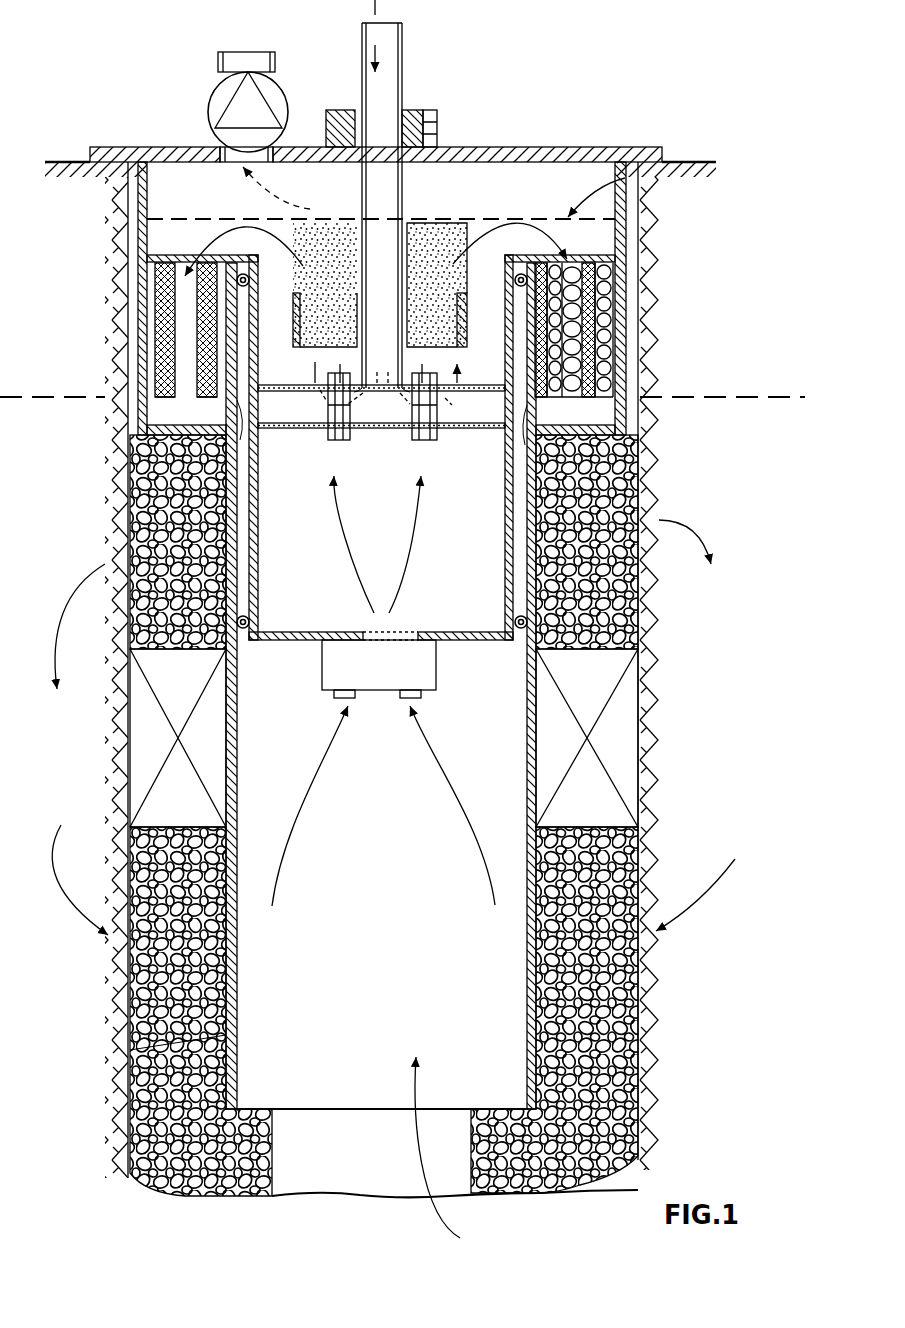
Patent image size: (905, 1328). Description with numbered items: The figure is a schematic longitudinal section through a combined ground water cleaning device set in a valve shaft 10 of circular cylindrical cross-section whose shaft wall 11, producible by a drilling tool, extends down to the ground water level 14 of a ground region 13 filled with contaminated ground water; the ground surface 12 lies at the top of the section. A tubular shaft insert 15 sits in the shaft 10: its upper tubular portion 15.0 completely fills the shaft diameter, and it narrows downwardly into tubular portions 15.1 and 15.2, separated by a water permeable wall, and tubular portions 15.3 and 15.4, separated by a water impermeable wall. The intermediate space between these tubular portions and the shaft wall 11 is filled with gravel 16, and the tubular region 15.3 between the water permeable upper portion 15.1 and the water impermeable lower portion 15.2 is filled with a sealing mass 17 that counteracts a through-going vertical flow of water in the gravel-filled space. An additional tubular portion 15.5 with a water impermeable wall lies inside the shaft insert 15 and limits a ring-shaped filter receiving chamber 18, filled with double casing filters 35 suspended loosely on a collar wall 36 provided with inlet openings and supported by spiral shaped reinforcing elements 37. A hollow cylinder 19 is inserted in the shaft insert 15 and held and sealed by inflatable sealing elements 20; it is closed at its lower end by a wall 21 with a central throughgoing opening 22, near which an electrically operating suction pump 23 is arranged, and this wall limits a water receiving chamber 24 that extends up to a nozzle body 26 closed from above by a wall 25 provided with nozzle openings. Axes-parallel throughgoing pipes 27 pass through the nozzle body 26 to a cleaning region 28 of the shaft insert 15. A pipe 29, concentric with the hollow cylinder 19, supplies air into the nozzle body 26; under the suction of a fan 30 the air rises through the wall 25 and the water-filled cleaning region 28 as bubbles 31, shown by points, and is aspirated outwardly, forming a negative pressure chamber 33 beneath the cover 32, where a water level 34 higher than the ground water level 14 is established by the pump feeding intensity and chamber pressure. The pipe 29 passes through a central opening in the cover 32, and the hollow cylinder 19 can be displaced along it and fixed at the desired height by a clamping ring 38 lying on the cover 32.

The valve shaft 10 is at (317, 1161).
The shaft wall 11 is at (642, 484).
The ground surface 12 is at (690, 160).
The ground region 13 is at (734, 650).
The level 14 is at (750, 393).
The tubular shaft insert 15 is at (642, 338).
The upper tubular portion 15.0 is at (605, 310).
The water permeable upper tubular portion 15.1 is at (149, 487).
The water impermeable lower tubular portion 15.2 is at (223, 976).
The tubular region 15.3 is at (223, 706).
The tubular portion 15.4 is at (230, 1076).
The additional tubular portion 15.5 is at (225, 319).
The gravel 16 is at (599, 1013).
The sealing mass 17 is at (615, 738).
The ring-shaped filter receiving chamber 18 is at (164, 411).
The hollow cylinder 19 is at (251, 559).
The inflatable sealing elements 20 is at (249, 619).
The wall 21 is at (468, 642).
The central throughgoing opening 22 is at (397, 631).
The electrically operating suction pump 23 is at (418, 669).
The water receiving chamber 24 is at (473, 547).
The wall provided with nozzle openings 25 is at (492, 385).
The nozzle body 26 is at (470, 428).
The axes-parallel throughgoing pipes 27 is at (324, 440).
The cleaning region 28 is at (494, 291).
The pipe 29 is at (402, 42).
The fan 30 is at (207, 95).
The bubbles 31 is at (450, 242).
The cover 32 is at (567, 149).
The negative pressure chamber 33 is at (204, 202).
The water level 34 is at (625, 178).
The double casing filters 35 is at (160, 285).
The collar wall 36 is at (138, 231).
The spiral shaped reinforcing elements 37 is at (608, 275).
The clamping ring 38 is at (432, 105).